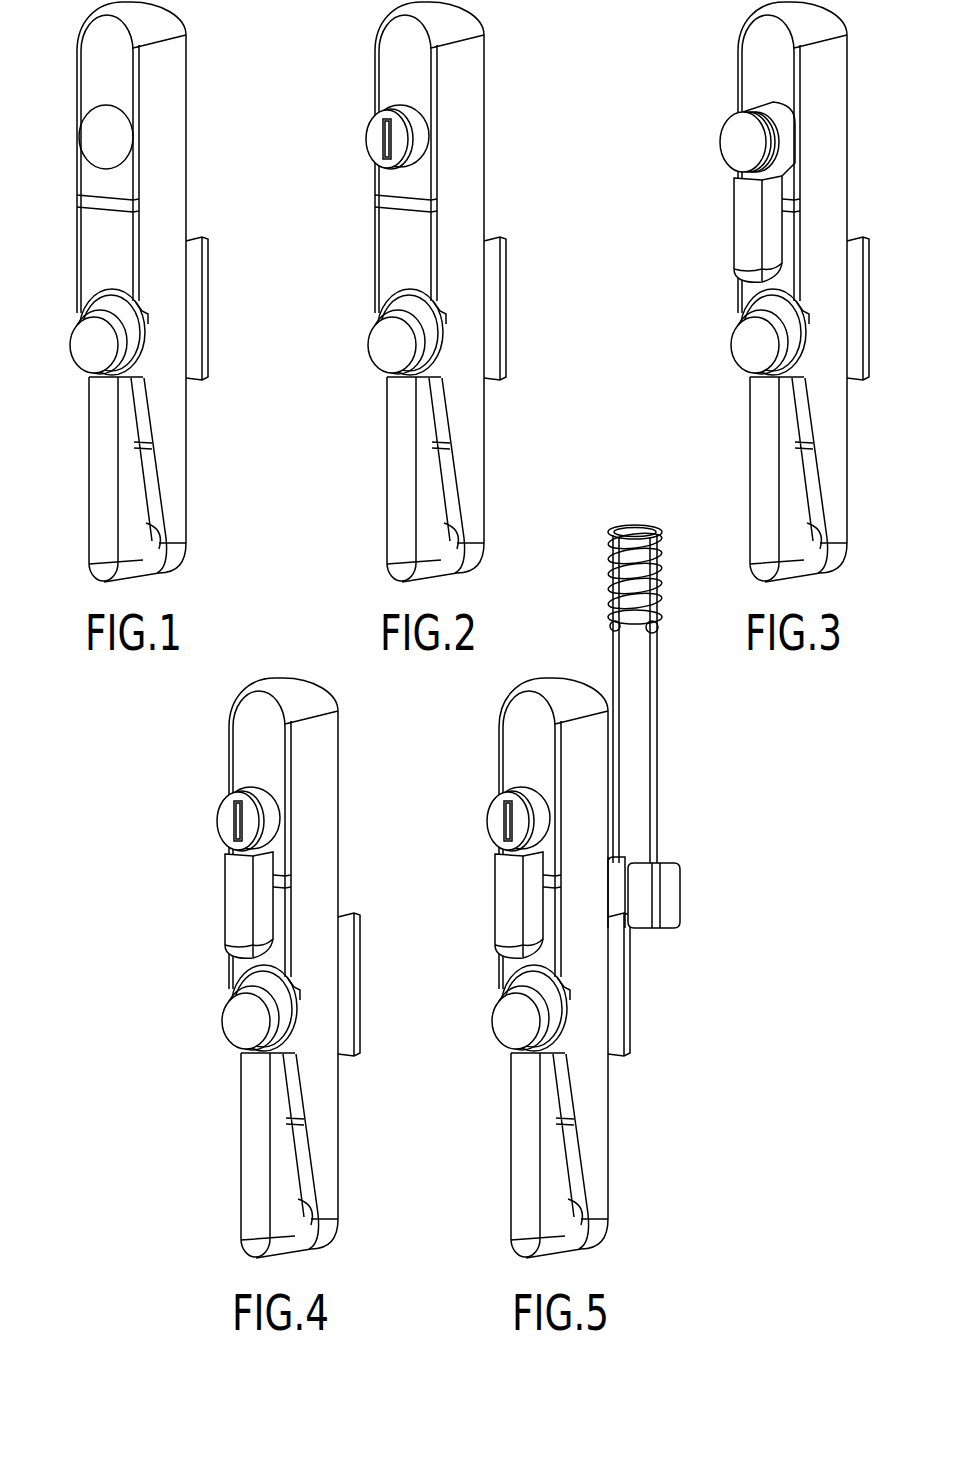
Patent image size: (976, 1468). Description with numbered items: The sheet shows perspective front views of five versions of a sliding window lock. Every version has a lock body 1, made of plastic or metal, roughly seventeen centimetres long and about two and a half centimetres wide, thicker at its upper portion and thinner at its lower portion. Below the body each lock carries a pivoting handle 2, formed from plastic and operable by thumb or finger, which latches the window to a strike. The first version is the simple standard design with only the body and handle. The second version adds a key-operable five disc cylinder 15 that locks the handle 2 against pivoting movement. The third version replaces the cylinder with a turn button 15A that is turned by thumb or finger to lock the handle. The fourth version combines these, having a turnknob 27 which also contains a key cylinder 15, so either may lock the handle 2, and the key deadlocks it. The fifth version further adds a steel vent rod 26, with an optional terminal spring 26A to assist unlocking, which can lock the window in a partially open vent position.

In FIG. 1, the lock body 1 is at (177, 124).
In FIG. 1, the pivoting handle 2 is at (97, 477).
In FIG. 3, the pivoting handle 2 is at (760, 474).
In FIG. 4, the pivoting handle 2 is at (248, 1179).
In FIG. 5, the pivoting handle 2 is at (525, 1186).
In FIG. 2, the five disc cylinder 15 is at (372, 139).
In FIG. 4, the five disc cylinder 15 is at (225, 822).
In FIG. 3, the turn button 15A is at (740, 218).
In FIG. 5, the vent rod 26 is at (652, 778).
In FIG. 5, the terminal spring 26A is at (608, 568).
In FIG. 4, the turnknob 27 is at (232, 907).